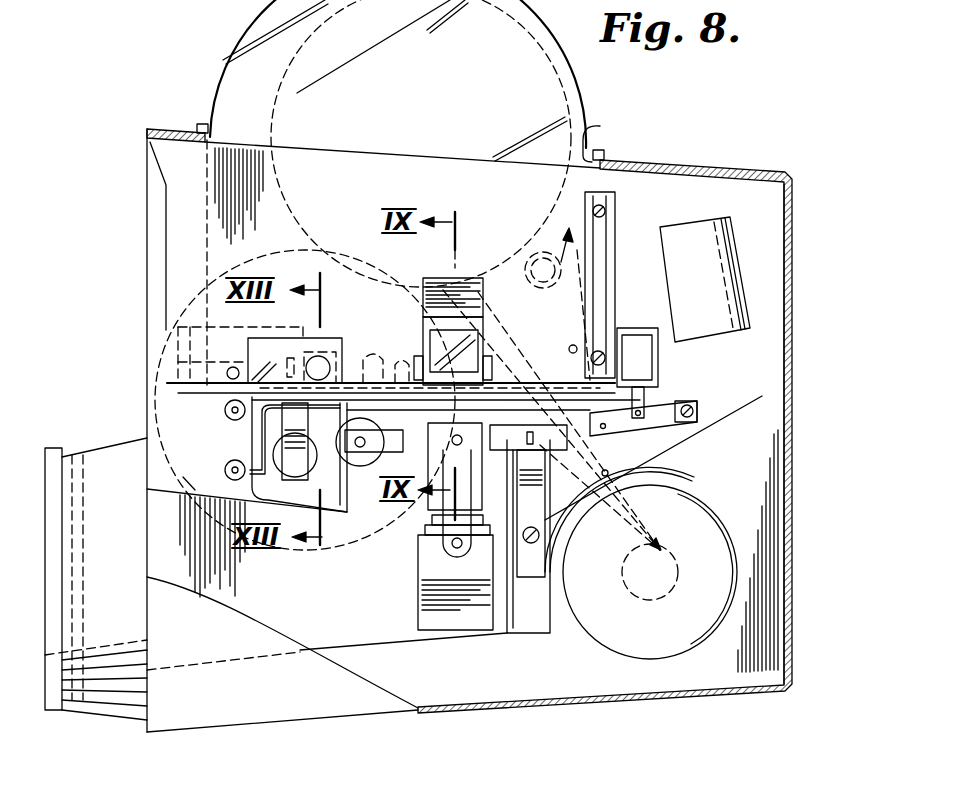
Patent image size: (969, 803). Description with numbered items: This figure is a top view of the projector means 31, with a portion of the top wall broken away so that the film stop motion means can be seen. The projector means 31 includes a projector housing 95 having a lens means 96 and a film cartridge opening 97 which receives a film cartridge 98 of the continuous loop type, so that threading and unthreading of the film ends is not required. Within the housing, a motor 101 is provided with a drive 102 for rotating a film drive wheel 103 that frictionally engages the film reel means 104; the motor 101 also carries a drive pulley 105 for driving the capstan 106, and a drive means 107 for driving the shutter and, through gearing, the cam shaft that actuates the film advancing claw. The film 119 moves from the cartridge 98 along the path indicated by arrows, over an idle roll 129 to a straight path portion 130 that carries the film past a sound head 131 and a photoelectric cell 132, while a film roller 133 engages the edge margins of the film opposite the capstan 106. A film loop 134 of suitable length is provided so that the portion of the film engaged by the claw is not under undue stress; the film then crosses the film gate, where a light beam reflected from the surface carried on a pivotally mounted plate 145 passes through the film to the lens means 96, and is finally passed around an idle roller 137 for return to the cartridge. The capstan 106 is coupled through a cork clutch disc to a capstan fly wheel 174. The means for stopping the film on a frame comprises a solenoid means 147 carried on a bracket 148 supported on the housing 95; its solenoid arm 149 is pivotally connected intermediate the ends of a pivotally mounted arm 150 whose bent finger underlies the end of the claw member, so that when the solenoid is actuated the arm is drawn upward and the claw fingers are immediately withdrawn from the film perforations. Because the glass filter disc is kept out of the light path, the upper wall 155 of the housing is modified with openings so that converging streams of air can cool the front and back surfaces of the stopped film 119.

The projector means 31 is at (718, 157).
The projector housing 95 is at (790, 300).
The lens means 96 is at (100, 460).
The film cartridge opening 97 is at (596, 127).
The film cartridge 98 is at (237, 43).
The motor 101 is at (620, 645).
The drive 102 is at (640, 471).
The film drive wheel 103 is at (536, 264).
The film reel means 104 is at (565, 82).
The drive pulley 105 is at (366, 590).
The capstan 106 is at (307, 414).
The drive means 107 is at (660, 550).
The film 119 is at (292, 272).
The idle roll 129 is at (228, 371).
The straight path portion 130 is at (276, 337).
The sound head 131 is at (312, 357).
The photoelectric cell 132 is at (226, 471).
The film roller 133 is at (355, 358).
The film loop 134 is at (403, 298).
The idle roller 137 is at (568, 350).
The pivotally mounted plate 145 is at (487, 332).
The solenoid means 147 is at (650, 356).
The bracket 148 is at (612, 290).
The solenoid arm 149 is at (692, 403).
The pivotally mounted arm 150 is at (672, 423).
The upper wall 155 is at (450, 166).
The capstan fly wheel 174 is at (297, 547).